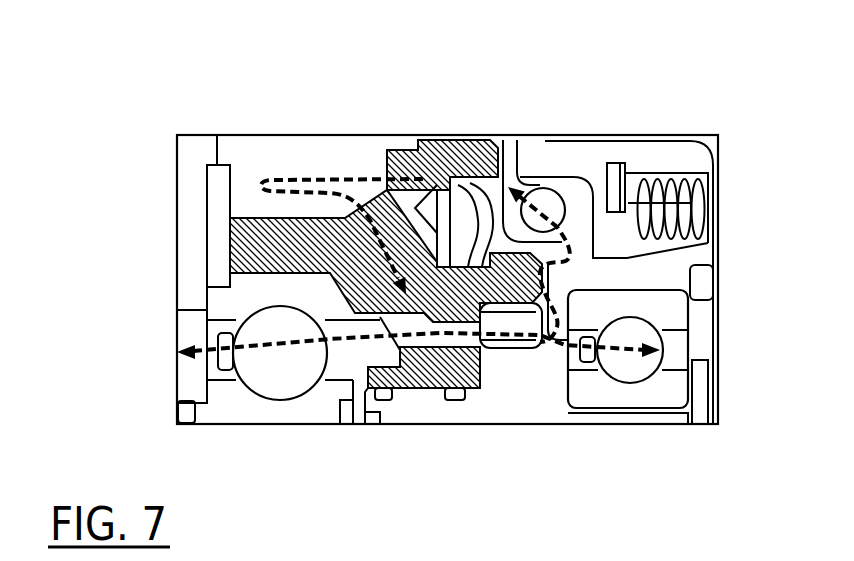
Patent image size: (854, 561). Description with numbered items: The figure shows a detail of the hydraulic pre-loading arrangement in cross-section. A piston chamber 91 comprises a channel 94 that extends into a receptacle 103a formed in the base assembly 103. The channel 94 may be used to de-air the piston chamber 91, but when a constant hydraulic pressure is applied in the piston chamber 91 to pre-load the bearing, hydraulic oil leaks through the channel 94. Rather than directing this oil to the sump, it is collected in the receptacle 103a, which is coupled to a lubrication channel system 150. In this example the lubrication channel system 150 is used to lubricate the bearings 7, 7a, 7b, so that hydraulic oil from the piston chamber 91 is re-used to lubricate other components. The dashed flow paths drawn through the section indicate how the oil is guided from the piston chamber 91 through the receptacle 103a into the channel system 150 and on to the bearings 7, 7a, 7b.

The bearing 7 is at (553, 200).
The bearing 7a is at (253, 413).
The bearing 7b is at (585, 393).
The piston chamber 91 is at (460, 220).
The channel 94 is at (413, 180).
The base assembly 103 is at (280, 248).
The receptacle 103a is at (333, 163).
The lubrication channel system 150 is at (385, 258).